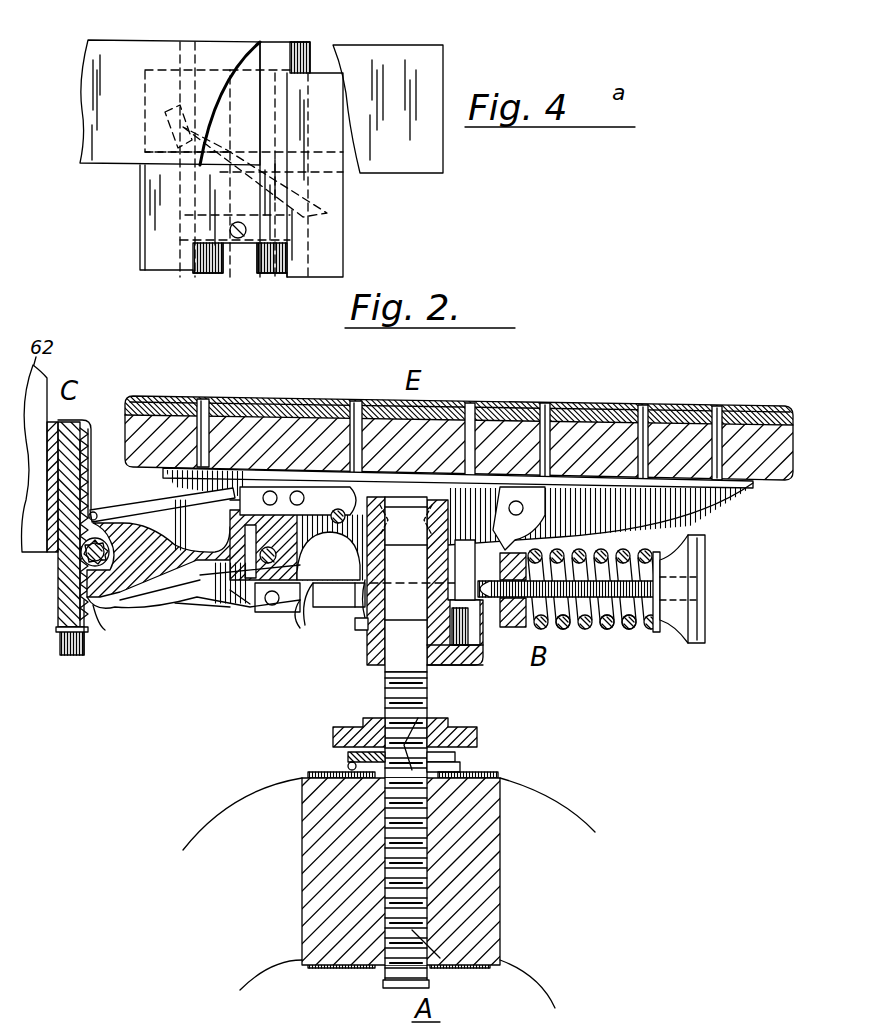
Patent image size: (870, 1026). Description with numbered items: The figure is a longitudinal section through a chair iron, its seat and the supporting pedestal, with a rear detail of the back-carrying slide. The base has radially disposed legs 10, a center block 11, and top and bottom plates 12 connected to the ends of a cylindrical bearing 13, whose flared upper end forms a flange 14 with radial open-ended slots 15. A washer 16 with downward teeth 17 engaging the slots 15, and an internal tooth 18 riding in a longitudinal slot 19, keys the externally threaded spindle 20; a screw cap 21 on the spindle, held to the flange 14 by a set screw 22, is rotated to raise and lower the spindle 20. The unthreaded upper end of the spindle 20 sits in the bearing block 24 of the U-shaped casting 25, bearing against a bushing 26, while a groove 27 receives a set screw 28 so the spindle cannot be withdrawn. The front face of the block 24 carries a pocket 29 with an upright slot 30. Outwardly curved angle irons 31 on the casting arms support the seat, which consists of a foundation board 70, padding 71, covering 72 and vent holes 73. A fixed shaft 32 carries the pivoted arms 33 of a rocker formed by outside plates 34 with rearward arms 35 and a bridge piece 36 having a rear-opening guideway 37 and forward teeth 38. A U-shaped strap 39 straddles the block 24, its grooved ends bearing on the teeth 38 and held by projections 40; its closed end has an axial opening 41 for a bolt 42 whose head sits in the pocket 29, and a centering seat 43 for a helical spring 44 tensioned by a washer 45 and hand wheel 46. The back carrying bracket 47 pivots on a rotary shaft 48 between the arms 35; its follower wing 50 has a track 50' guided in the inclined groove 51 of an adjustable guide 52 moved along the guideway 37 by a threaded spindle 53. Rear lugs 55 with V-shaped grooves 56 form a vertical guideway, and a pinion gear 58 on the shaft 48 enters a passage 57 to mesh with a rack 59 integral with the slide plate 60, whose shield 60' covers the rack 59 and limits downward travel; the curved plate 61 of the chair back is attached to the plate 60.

In FIG. 2, the legs 10 is at (220, 818).
In FIG. 2, the center block 11 is at (490, 862).
In FIG. 2, the top and bottom plates 12 is at (320, 774).
In FIG. 2, the cylindrical bearing 13 is at (436, 946).
In FIG. 2, the flange 14 is at (455, 757).
In FIG. 2, the radial open ended slots 15 is at (460, 767).
In FIG. 2, the washer 16 is at (348, 757).
In FIG. 2, the teeth 17 is at (490, 775).
In FIG. 2, the internal tooth 18 is at (440, 728).
In FIG. 2, the longitudinal slot 19 is at (398, 740).
In FIG. 2, the spindle 20 is at (428, 682).
In FIG. 2, the screw cap 21 is at (338, 730).
In FIG. 2, the set screw 22 is at (348, 764).
In FIG. 2, the bearing block 24 is at (367, 650).
In FIG. 2, the U-shaped casting 25 is at (322, 540).
In FIG. 2, the bushing 26 is at (470, 665).
In FIG. 2, the groove 27 is at (404, 620).
In FIG. 2, the set screw 28 is at (355, 625).
In FIG. 2, the pocket 29 is at (470, 648).
In FIG. 2, the upright slot 30 is at (474, 622).
In FIG. 2, the angle irons 31 is at (175, 480).
In FIG. 2, the fixed shaft 32 is at (310, 520).
In FIG. 2, the arms 33 is at (339, 583).
In FIG. 2, the outside plates 34 is at (205, 604).
In FIG. 2, the rearwardly projecting arms 35 is at (145, 600).
In FIG. 2, the bridge piece 36 is at (262, 612).
In FIG. 2, the guideway 37 is at (250, 577).
In FIG. 2, the teeth 38 is at (300, 612).
In FIG. 2, the U-shaped strap 39 is at (355, 585).
In FIG. 2, the projections 40 is at (302, 628).
In FIG. 2, the axial opening 41 is at (566, 629).
In FIG. 2, the bolt 42 is at (585, 548).
In FIG. 2, the centering seat 43 is at (528, 549).
In FIG. 2, the helical spring 44 is at (630, 630).
In FIG. 2, the washer 45 is at (658, 562).
In FIG. 2, the hand wheel 46 is at (706, 572).
In FIG. 2, the back carrying bracket 47 is at (100, 605).
In FIG. 2, the rotary shaft 48 is at (103, 510).
In FIG. 2, the follower wing 50 is at (172, 543).
In FIG. 4a, the track 50' is at (221, 159).
In FIG. 2, the inclined groove 51 is at (185, 573).
In FIG. 2, the adjustable guide 52 is at (236, 604).
In FIG. 2, the threaded spindle 53 is at (244, 520).
In FIG. 4a, the lugs 55 is at (305, 275).
In FIG. 2, the lugs 55 is at (84, 650).
In FIG. 4a, the V-shaped grooves 56 is at (208, 275).
In FIG. 2, the V-shaped grooves 56 is at (64, 656).
In FIG. 2, the passage 57 is at (96, 510).
In FIG. 2, the pinion gear 58 is at (104, 538).
In FIG. 4a, the rack 59 is at (242, 48).
In FIG. 2, the rack 59 is at (80, 574).
In FIG. 4a, the slide plate 60 is at (223, 142).
In FIG. 2, the slide plate 60 is at (143, 524).
In FIG. 2, the shield 60' is at (93, 451).
In FIG. 4a, the curved plate 61 is at (154, 48).
In FIG. 2, the curved plate 61 is at (47, 452).
In FIG. 2, the foundation board 70 is at (318, 420).
In FIG. 2, the padding 71 is at (230, 418).
In FIG. 2, the covering 72 is at (530, 425).
In FIG. 2, the vent holes 73 is at (204, 410).